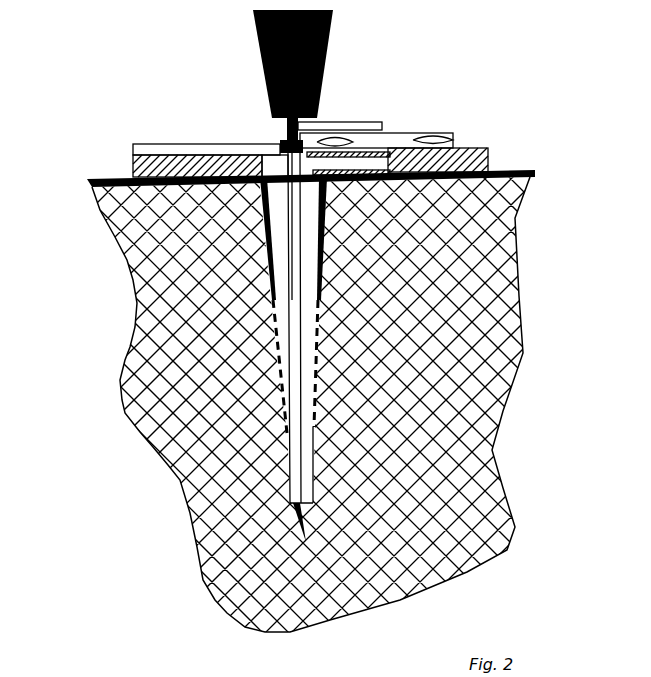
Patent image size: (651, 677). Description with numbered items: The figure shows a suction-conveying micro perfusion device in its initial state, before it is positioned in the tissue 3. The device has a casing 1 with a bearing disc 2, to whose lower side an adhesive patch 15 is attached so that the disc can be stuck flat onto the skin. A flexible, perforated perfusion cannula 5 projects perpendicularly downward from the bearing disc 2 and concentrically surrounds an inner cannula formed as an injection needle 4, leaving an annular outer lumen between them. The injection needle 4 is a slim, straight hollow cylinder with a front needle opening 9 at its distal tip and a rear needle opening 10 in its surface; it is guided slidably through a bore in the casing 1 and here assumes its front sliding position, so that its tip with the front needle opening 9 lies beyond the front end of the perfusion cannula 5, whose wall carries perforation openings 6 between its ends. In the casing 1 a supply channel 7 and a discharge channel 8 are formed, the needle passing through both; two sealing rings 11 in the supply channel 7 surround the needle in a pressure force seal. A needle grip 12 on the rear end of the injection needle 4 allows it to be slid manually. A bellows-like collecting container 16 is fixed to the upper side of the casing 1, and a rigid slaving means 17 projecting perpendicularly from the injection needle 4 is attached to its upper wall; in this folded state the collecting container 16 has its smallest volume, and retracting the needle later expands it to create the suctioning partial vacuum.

The casing 1 is at (148, 113).
The bearing disc 2 is at (133, 170).
The tissue 3 is at (461, 272).
The injection needle 4 is at (290, 278).
The perfusion cannula 5 is at (268, 310).
The perforation openings 6 is at (278, 373).
The supply channel 7 is at (132, 147).
The discharge channel 8 is at (453, 138).
The front needle opening 9 is at (303, 527).
The rear needle opening 10 is at (283, 157).
The sealing rings 11 is at (292, 148).
The needle grip 12 is at (253, 47).
The adhesive patch 15 is at (90, 187).
The collecting container 16 is at (412, 135).
The slaving means 17 is at (348, 122).